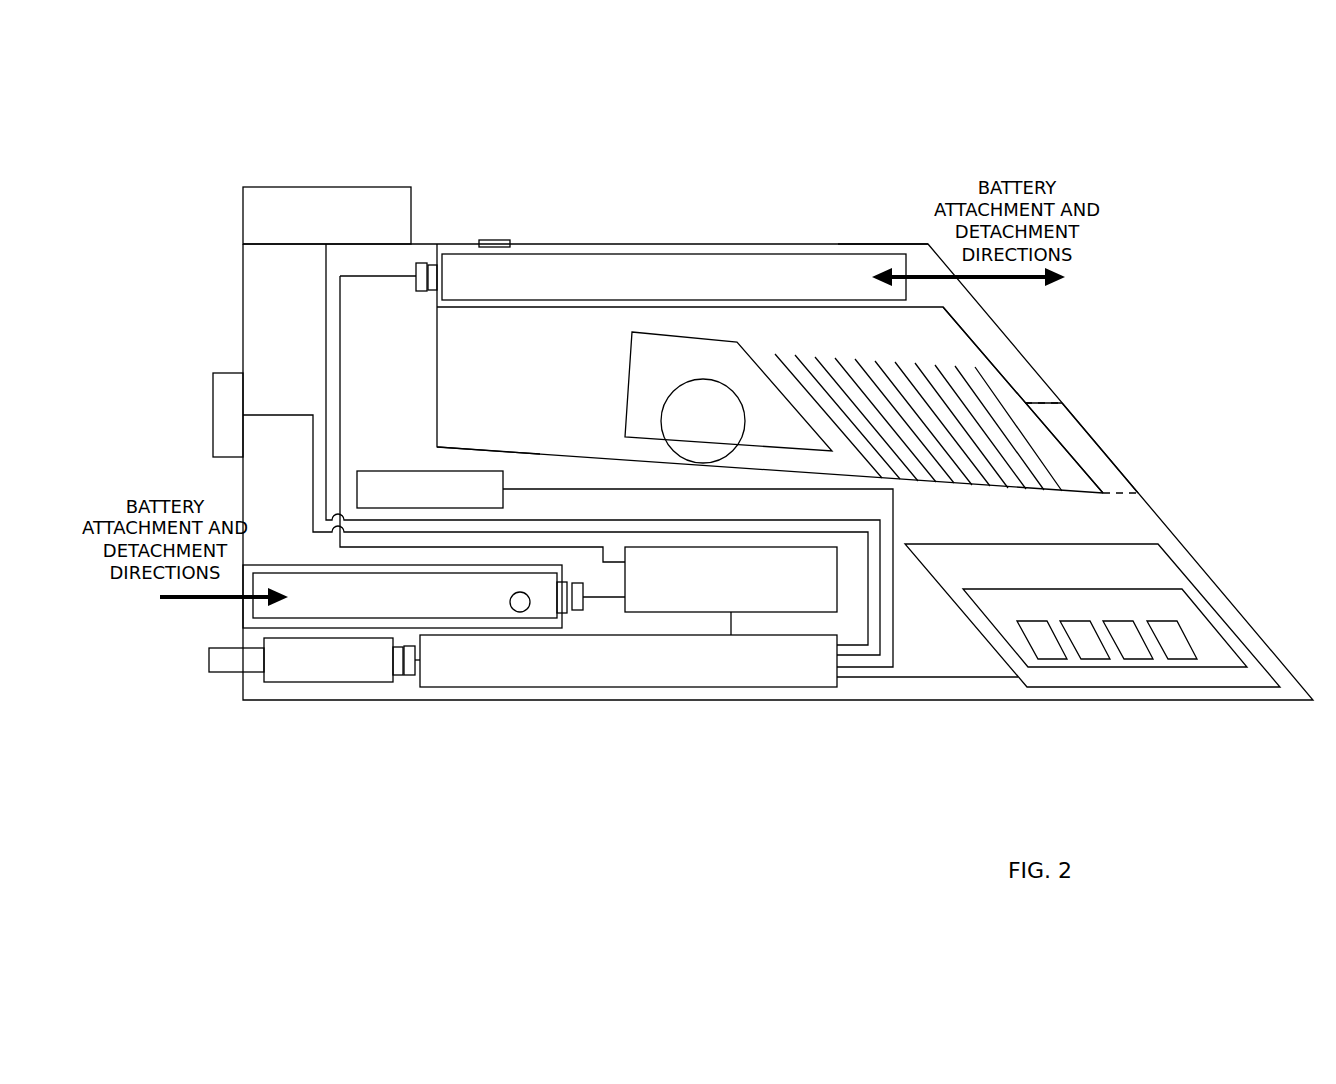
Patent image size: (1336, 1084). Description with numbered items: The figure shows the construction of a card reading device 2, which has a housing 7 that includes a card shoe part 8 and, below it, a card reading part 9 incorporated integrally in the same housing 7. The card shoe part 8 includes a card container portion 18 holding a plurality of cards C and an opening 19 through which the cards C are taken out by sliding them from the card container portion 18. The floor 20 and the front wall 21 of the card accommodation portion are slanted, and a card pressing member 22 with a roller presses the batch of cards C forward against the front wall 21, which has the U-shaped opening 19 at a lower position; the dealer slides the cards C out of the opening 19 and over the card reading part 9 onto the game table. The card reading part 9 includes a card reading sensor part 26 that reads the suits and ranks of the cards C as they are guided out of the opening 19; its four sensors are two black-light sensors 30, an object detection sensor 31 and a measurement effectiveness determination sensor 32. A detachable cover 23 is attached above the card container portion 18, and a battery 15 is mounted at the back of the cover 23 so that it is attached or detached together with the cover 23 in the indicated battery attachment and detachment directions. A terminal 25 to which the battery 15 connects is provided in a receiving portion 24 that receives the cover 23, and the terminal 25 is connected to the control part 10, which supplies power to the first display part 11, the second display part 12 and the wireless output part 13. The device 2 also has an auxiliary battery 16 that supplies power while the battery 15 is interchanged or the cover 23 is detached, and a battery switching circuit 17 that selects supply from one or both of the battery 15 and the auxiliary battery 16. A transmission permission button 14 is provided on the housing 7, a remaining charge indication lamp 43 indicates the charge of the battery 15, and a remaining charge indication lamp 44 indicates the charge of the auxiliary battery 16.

The card reading device 2 is at (1110, 158).
The housing 7 is at (243, 305).
The card shoe part 8 is at (972, 340).
The card reading part 9 is at (1173, 561).
The control part 10 is at (670, 688).
The first display part 11 is at (395, 471).
The second display part 12 is at (326, 187).
The wireless output part 13 is at (330, 685).
The transmission permission button 14 is at (213, 415).
The battery 15 is at (676, 244).
The auxiliary battery 16 is at (435, 620).
The battery switching circuit 17 is at (785, 613).
The card container portion 18 is at (541, 359).
The opening 19 is at (1085, 450).
The floor 20 is at (462, 445).
The front wall 21 is at (1012, 388).
The card pressing member 22 is at (630, 382).
The cover 23 is at (838, 244).
The receiving portion 24 is at (430, 293).
The terminal 25 is at (416, 270).
The card reading sensor part 26 is at (1193, 607).
The black-light sensors 30 is at (1068, 660).
The object detection sensor 31 is at (1153, 660).
The measurement effectiveness determination sensor 32 is at (1197, 660).
The remaining charge indication lamp 43 is at (494, 240).
The remaining charge indication lamp 44 is at (520, 613).
The cards C is at (840, 358).